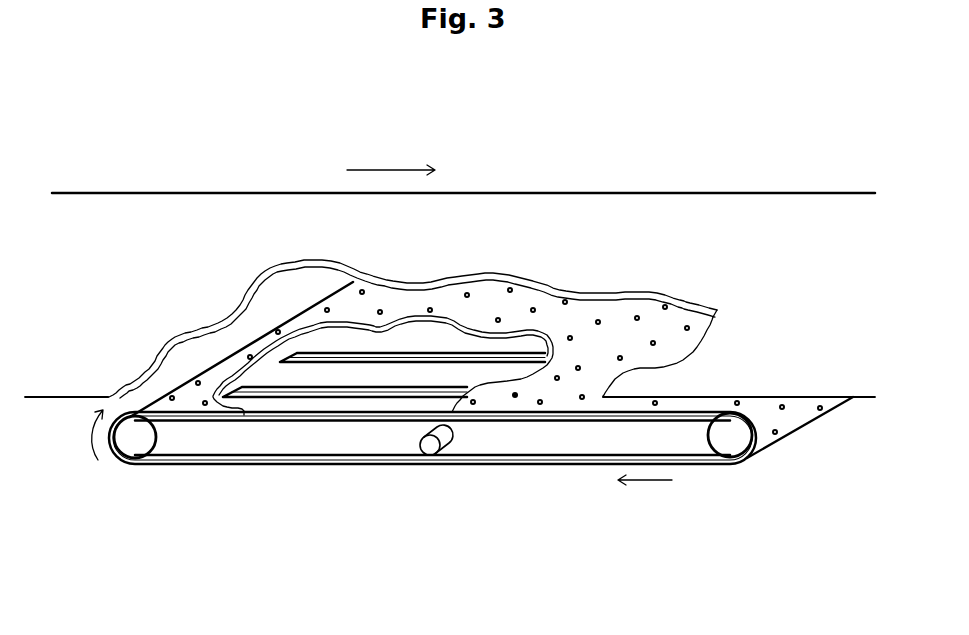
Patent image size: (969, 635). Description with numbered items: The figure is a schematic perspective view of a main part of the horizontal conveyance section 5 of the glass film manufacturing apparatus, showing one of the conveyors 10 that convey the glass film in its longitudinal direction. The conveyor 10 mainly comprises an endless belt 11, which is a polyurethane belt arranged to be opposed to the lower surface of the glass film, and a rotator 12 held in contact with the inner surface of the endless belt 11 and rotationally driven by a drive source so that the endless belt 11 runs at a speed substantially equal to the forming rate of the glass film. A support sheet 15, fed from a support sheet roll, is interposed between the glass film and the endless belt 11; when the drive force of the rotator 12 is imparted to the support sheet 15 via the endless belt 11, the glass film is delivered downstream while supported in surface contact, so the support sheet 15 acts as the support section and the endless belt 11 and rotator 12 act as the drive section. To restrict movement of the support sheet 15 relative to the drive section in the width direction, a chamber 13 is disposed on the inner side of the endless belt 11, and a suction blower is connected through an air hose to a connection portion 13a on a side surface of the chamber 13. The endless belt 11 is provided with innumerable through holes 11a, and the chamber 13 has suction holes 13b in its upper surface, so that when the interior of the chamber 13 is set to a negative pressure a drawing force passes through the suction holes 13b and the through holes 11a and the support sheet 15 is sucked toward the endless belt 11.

The horizontal conveyance section 5 is at (707, 168).
The conveyor 10 is at (432, 450).
The endless belt 11 is at (207, 462).
The through holes 11a is at (514, 396).
The rotator 12 is at (733, 445).
The chamber 13 is at (384, 440).
The connection portion 13a is at (431, 448).
The suction holes 13b is at (328, 362).
The support sheet 15 is at (785, 376).